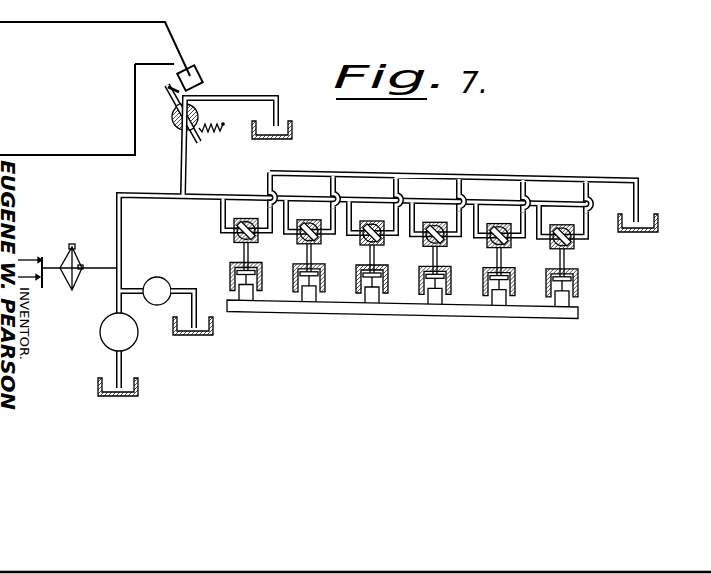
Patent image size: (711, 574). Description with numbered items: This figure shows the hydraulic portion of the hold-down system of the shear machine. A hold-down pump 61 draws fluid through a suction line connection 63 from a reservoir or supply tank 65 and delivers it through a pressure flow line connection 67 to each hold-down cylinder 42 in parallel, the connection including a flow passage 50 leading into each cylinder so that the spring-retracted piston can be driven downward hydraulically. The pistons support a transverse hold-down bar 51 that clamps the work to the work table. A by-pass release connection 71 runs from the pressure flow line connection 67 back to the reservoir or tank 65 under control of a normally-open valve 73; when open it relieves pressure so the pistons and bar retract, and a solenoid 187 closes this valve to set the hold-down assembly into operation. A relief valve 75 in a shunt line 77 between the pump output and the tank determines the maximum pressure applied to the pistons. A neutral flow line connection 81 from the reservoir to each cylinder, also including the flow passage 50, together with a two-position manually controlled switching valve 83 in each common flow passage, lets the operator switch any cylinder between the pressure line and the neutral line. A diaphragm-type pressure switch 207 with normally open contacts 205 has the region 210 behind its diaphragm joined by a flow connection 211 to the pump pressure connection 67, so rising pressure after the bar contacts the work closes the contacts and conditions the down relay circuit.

The solenoid 187 is at (197, 75).
The normally-open valve 73 is at (172, 121).
The by-pass release connection 71 is at (181, 157).
The pressure flow line connection 67 is at (140, 197).
The reservoir or supply tank 65 is at (141, 383).
The neutral flow line connection 81 is at (543, 175).
The two-position manually controlled switching valve 83 is at (562, 219).
The flow passage 50 is at (250, 248).
The cylinder 42 is at (231, 264).
The hold-down bar 51 is at (386, 313).
The relief valve 75 is at (153, 276).
The shunt line 77 is at (176, 289).
The pump 61 is at (105, 320).
The suction line connection 63 is at (116, 360).
The normally open contacts 205 is at (36, 258).
The pressure switch 207 is at (70, 281).
The region behind the diaphragm 210 is at (78, 266).
The flow connection 211 is at (102, 272).